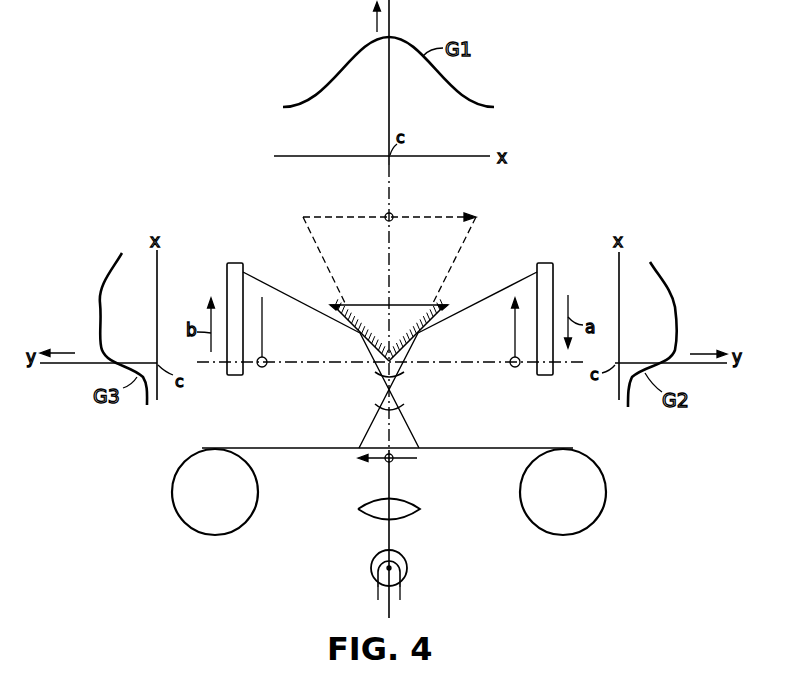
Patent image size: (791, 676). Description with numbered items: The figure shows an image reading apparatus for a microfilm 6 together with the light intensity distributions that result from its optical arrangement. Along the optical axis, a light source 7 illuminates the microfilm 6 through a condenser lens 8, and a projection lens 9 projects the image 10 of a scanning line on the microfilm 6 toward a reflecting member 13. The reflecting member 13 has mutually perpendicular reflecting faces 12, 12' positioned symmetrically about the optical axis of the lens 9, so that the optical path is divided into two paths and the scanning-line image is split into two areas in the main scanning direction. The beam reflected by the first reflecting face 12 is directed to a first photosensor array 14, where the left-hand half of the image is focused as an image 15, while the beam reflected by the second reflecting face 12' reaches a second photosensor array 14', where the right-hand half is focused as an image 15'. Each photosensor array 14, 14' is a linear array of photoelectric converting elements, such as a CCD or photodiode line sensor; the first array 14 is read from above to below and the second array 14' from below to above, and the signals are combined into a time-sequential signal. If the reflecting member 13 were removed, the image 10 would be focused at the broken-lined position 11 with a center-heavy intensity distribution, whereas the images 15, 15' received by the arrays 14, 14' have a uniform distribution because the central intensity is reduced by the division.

The microfilm 6 is at (297, 449).
The light source 7 is at (408, 570).
The condenser lens 8 is at (413, 513).
The projection lens 9 is at (395, 390).
The image 10 is at (395, 460).
The broken-lined position 11 is at (340, 215).
The reflecting face 12 is at (434, 323).
The reflecting face 12' is at (344, 321).
The reflecting member 13 is at (406, 310).
The first photosensor array 14 is at (507, 314).
The second photosensor array 14' is at (272, 314).
The image 15 is at (497, 332).
The image 15' is at (283, 332).